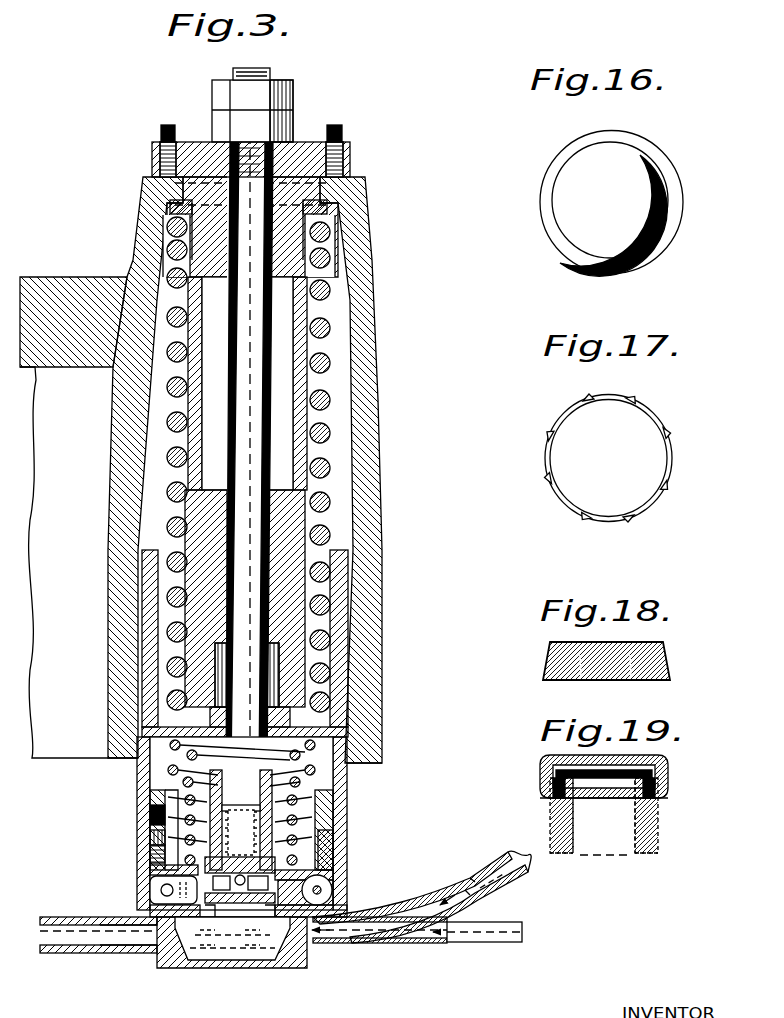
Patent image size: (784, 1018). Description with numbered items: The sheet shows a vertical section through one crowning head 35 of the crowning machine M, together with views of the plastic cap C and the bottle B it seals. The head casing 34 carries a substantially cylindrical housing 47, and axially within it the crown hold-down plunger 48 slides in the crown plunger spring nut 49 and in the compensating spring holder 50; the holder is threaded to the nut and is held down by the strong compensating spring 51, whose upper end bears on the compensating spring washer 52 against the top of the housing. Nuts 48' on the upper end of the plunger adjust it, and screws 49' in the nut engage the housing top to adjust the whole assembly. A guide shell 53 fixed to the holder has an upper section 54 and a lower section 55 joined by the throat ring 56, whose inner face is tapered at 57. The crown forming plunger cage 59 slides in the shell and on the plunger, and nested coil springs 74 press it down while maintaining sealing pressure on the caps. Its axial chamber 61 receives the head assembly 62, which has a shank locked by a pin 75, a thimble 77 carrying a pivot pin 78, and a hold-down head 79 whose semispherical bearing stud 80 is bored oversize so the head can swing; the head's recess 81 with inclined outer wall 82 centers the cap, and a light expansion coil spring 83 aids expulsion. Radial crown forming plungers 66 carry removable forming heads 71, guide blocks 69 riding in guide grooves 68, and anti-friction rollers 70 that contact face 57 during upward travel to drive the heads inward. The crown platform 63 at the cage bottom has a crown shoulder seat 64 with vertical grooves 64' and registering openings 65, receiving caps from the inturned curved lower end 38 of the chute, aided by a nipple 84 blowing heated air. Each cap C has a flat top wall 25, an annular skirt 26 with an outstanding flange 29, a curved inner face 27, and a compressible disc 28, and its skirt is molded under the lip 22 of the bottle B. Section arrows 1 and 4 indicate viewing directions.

In FIG. 3, the head casing 34 is at (107, 273).
In FIG. 3, the cylindrical housing 47 is at (373, 484).
In FIG. 3, the crowning head 35 is at (357, 377).
In FIG. 3, the compensating spring washer 52 is at (322, 210).
In FIG. 3, the compensating spring 51 is at (338, 258).
In FIG. 3, the compensating spring holder 50 is at (302, 345).
In FIG. 3, the nested coil springs 74 is at (333, 756).
In FIG. 3, the crown hold-down plunger 48 is at (255, 435).
In FIG. 3, the nuts 48' is at (277, 105).
In FIG. 3, the crown plunger spring nut 49 is at (252, 149).
In FIG. 3, the screws 49' is at (265, 116).
In FIG. 3, the crowning machine M is at (118, 222).
In FIG. 3, the section arrow 1 is at (243, 617).
In FIG. 3, the pin 75 is at (241, 763).
In FIG. 3, the axial chamber 61 is at (285, 816).
In FIG. 3, the crown forming plunger cage 59 is at (318, 832).
In FIG. 3, the guide shell 53 is at (333, 785).
In FIG. 3, the upper section 54 is at (333, 799).
In FIG. 3, the expansion coil spring 83 is at (150, 816).
In FIG. 3, the thimble 77 is at (150, 838).
In FIG. 3, the head assembly 62 is at (150, 856).
In FIG. 3, the throat ring 56 is at (333, 856).
In FIG. 3, the tapered inner face 57 is at (148, 870).
In FIG. 3, the semispherical bearing stud 80 is at (333, 870).
In FIG. 3, the forming heads 71 is at (150, 883).
In FIG. 3, the crown forming plungers 66 is at (150, 896).
In FIG. 3, the lower section 55 is at (332, 888).
In FIG. 3, the anti-friction rollers 70 is at (333, 900).
In FIG. 3, the guide grooves 68 is at (347, 911).
In FIG. 3, the outer wall of recess 82 is at (213, 914).
In FIG. 3, the recess 81 is at (264, 914).
In FIG. 3, the crown platform 63 is at (307, 960).
In FIG. 3, the pivot pin 78 is at (217, 933).
In FIG. 3, the hold-down head 79 is at (254, 933).
In FIG. 3, the registering openings 65 is at (165, 953).
In FIG. 3, the crown shoulder seat 64 is at (190, 981).
In FIG. 3, the vertical grooves 64' is at (216, 984).
In FIG. 3, the section arrow 4 is at (240, 975).
In FIG. 3, the guide blocks 69 is at (379, 930).
In FIG. 3, the nipple 84 is at (465, 940).
In FIG. 3, the inturned curved lower end 38 is at (522, 880).
In FIG. 16, the annular outstanding flange 29 is at (658, 148).
In FIG. 17, the annular outstanding flange 29 is at (672, 444).
In FIG. 16, the top wall 25 is at (645, 185).
In FIG. 17, the top wall 25 is at (648, 462).
In FIG. 18, the top wall 25 is at (640, 640).
In FIG. 19, the top wall 25 is at (560, 762).
In FIG. 16, the annular skirt 26 is at (665, 260).
In FIG. 17, the annular skirt 26 is at (665, 487).
In FIG. 18, the annular skirt 26 is at (665, 653).
In FIG. 19, the annular skirt 26 is at (668, 780).
In FIG. 16, the plastic cap C is at (648, 220).
In FIG. 17, the plastic cap C is at (645, 437).
In FIG. 18, the plastic cap C is at (540, 648).
In FIG. 19, the curved inner face 27 is at (540, 786).
In FIG. 19, the lip 22 is at (668, 800).
In FIG. 19, the compressible disc 28 is at (600, 790).
In FIG. 19, the bottle B is at (660, 828).